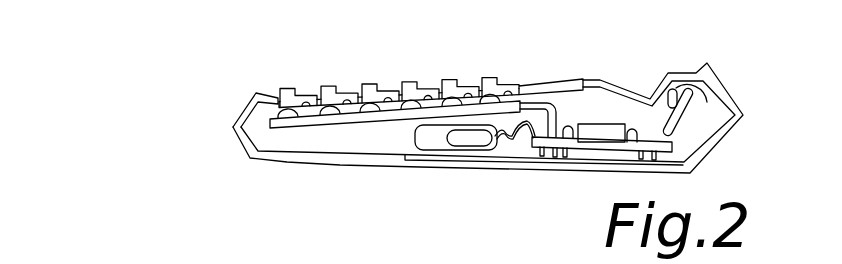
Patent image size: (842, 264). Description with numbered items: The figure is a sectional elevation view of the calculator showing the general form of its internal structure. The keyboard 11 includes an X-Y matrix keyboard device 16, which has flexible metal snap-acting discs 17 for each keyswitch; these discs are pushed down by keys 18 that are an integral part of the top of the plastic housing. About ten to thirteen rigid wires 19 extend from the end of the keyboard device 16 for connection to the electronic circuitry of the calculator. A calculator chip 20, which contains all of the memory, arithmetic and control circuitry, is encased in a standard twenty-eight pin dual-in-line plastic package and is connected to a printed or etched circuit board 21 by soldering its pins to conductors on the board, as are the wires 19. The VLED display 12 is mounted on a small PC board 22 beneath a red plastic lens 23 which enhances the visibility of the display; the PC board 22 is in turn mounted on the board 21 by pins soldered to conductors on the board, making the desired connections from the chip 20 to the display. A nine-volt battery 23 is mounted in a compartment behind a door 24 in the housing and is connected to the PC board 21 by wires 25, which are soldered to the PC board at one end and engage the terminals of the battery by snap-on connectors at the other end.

The keyboard 11 is at (430, 78).
The VLED display 12 is at (676, 80).
The X-Y matrix keyboard device 16 is at (506, 106).
The flexible metal snap-acting discs 17 is at (447, 79).
The keys 18 is at (368, 85).
The rigid wires 19 is at (542, 103).
The calculator chip 20 is at (595, 128).
The printed circuit board 21 is at (580, 146).
The PC board 22 is at (712, 90).
The red plastic lens 23 is at (437, 147).
The door 24 is at (412, 171).
The wires 25 is at (513, 140).